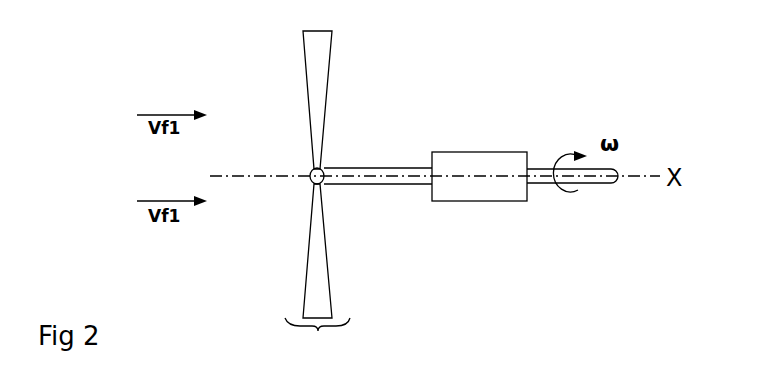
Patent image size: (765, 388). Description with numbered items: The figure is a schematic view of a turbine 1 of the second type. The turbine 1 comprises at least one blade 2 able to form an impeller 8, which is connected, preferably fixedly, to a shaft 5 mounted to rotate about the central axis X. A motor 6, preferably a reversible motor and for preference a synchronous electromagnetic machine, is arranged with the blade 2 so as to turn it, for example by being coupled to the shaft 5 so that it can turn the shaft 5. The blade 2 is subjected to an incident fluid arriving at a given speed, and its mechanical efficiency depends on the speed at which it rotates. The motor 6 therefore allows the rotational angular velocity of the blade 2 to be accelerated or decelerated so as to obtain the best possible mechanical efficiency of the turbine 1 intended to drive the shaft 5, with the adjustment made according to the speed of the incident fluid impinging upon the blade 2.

The turbine 1 is at (468, 67).
The blade 2 is at (332, 73).
The shaft 5 is at (372, 164).
The motor 6 is at (485, 155).
The impeller 8 is at (317, 339).